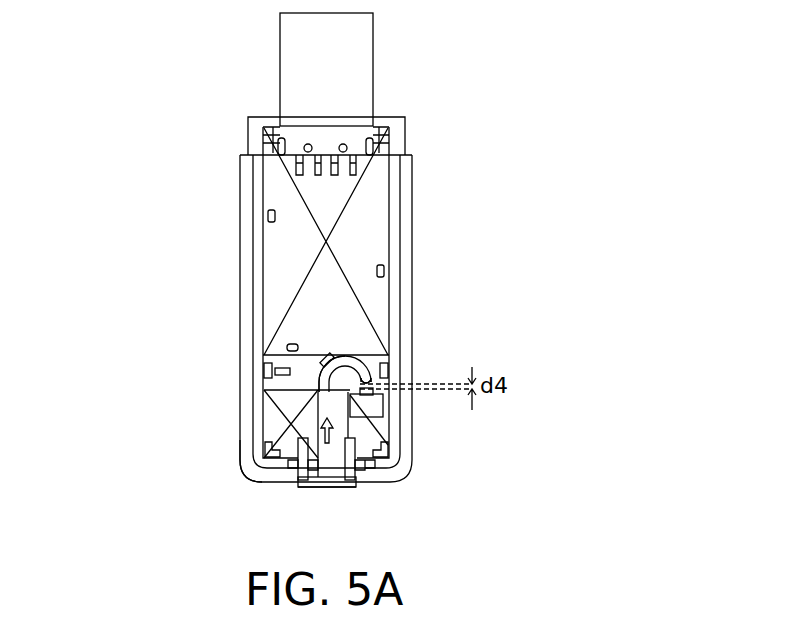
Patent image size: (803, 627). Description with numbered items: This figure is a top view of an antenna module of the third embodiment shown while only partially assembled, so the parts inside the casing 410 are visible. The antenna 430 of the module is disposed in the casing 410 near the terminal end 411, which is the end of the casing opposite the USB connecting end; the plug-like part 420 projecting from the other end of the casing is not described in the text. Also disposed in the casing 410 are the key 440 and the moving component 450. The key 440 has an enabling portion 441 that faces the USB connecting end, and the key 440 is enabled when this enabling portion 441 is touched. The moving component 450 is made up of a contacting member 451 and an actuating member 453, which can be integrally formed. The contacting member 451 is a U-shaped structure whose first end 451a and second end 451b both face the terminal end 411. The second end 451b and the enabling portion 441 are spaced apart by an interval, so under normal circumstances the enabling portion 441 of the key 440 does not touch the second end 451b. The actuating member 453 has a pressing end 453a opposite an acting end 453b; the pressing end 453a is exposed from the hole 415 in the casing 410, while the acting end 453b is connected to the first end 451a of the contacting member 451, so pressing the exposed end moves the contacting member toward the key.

The plug connector 420 is at (288, 43).
The casing 410 is at (247, 208).
The terminal end 411 is at (232, 470).
The hole 415 is at (295, 485).
The antenna 430 is at (282, 423).
The key 440 is at (362, 418).
The enabling portion 441 is at (373, 392).
The moving component 450 is at (511, 394).
The contacting member 451 is at (482, 340).
The first end 451a is at (337, 365).
The second end 451b is at (367, 377).
The actuating member 453 is at (472, 447).
The pressing end 453a is at (345, 486).
The acting end 453b is at (383, 405).